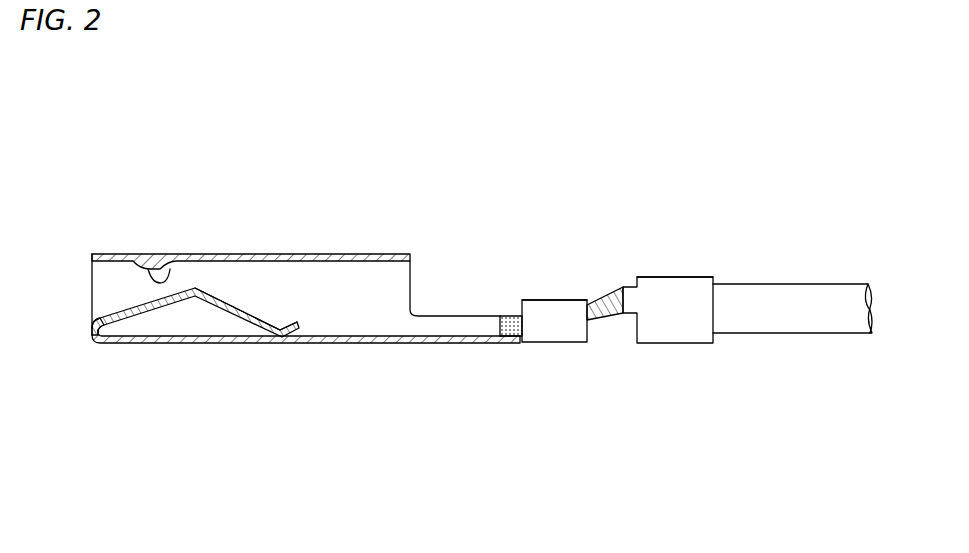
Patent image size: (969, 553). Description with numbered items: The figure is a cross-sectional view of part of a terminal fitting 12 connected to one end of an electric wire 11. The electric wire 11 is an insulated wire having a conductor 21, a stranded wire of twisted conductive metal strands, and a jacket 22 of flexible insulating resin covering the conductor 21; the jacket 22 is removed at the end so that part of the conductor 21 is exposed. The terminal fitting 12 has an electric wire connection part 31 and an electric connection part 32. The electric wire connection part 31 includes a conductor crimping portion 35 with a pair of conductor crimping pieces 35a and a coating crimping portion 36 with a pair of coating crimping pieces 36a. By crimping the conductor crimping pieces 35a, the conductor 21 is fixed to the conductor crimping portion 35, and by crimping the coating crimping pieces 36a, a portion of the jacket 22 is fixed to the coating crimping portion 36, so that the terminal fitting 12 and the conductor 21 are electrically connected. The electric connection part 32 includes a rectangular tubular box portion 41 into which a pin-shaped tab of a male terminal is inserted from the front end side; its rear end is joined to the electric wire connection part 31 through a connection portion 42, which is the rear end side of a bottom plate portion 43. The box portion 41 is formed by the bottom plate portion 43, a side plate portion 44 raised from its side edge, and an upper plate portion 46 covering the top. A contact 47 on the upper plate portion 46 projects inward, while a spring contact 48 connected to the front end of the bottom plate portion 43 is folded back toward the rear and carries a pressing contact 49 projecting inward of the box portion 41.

The electric wire 11 is at (792, 306).
The terminal fitting 12 is at (273, 288).
The conductor 21 is at (605, 300).
The jacket 22 is at (780, 333).
The electric wire connection part 31 is at (616, 330).
The electric connection part 32 is at (306, 344).
The conductor crimping portion 35 is at (551, 320).
The conductor crimping pieces 35a is at (558, 300).
The coating crimping portion 36 is at (669, 319).
The coating crimping pieces 36a is at (673, 277).
The box portion 41 is at (330, 254).
The connection portion 42 is at (465, 343).
The bottom plate portion 43 is at (192, 345).
The side plate portion 44 is at (100, 283).
The upper plate portion 46 is at (112, 254).
The contact 47 is at (151, 265).
The spring contact 48 is at (90, 305).
The pressing contact 49 is at (188, 270).